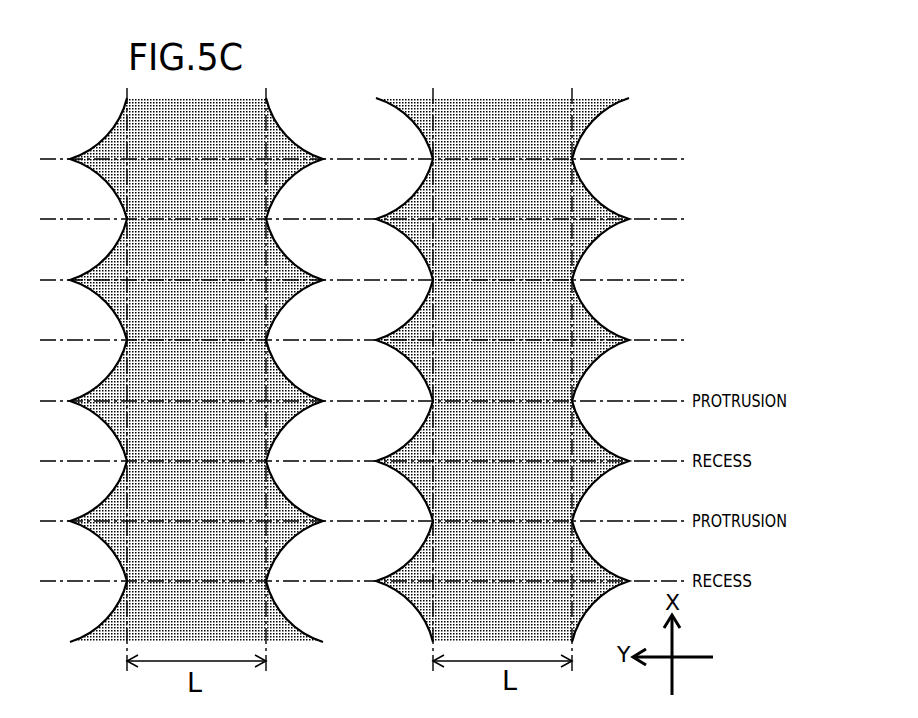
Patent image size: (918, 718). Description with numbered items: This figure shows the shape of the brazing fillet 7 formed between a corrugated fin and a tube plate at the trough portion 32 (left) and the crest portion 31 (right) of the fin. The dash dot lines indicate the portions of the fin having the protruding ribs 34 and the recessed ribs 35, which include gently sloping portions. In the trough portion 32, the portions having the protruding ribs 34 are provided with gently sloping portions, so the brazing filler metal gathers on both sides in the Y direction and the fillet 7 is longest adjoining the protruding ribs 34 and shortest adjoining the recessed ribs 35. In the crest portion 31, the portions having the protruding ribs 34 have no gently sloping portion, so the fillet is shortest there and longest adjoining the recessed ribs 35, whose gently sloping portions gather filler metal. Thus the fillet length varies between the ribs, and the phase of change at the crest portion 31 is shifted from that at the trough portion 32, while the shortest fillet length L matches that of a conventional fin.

The fillet 7 is at (96, 537).
The crest portion 31 is at (409, 607).
The trough portion 32 is at (67, 607).
The protruding rib 34 is at (433, 219).
The recessed rib 35 is at (415, 279).